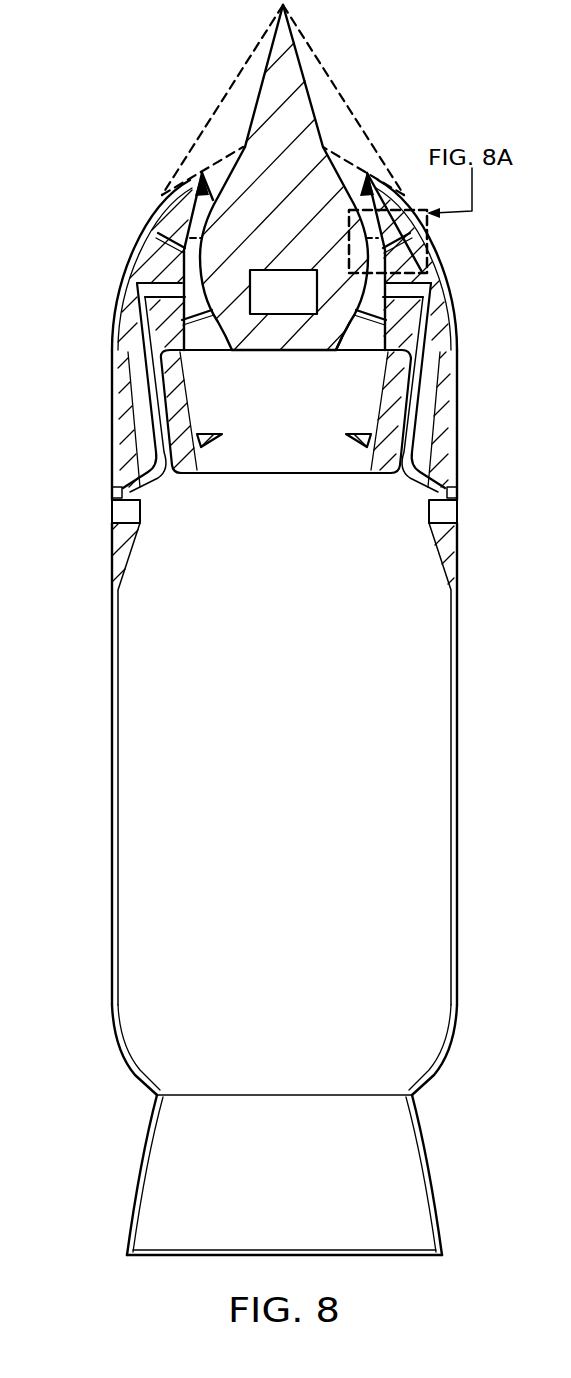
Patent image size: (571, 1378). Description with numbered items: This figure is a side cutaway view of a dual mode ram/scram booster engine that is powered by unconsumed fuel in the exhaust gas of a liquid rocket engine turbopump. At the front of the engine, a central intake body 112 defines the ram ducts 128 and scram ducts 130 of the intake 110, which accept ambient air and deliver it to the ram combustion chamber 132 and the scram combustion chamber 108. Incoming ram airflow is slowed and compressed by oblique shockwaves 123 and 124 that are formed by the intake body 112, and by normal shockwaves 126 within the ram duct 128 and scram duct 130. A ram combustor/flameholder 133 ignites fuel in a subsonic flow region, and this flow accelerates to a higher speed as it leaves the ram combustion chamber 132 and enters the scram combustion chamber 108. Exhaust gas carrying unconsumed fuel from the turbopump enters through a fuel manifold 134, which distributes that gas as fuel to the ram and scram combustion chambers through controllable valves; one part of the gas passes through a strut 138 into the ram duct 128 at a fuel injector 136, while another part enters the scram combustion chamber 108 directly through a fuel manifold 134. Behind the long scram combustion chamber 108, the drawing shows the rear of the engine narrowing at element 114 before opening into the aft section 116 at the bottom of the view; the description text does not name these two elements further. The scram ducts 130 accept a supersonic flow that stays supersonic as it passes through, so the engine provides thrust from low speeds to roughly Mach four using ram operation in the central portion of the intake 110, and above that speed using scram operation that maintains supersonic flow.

The scram combustion chamber 108 is at (303, 795).
The intake 110 is at (184, 132).
The central intake body 112 is at (303, 67).
The boat tail 114 is at (145, 1075).
The nozzle 116 is at (303, 1208).
The oblique shockwave 123 is at (248, 60).
The oblique shockwave 124 is at (347, 158).
The normal shockwaves 126 is at (437, 287).
The ram duct 128 is at (360, 343).
The scram duct 130 is at (140, 412).
The ram combustion chamber 132 is at (307, 463).
The ram combustor/flameholder 133 is at (347, 445).
The fuel manifold 134 is at (127, 513).
The fuel injector 136 is at (200, 320).
The strut 138 is at (157, 485).